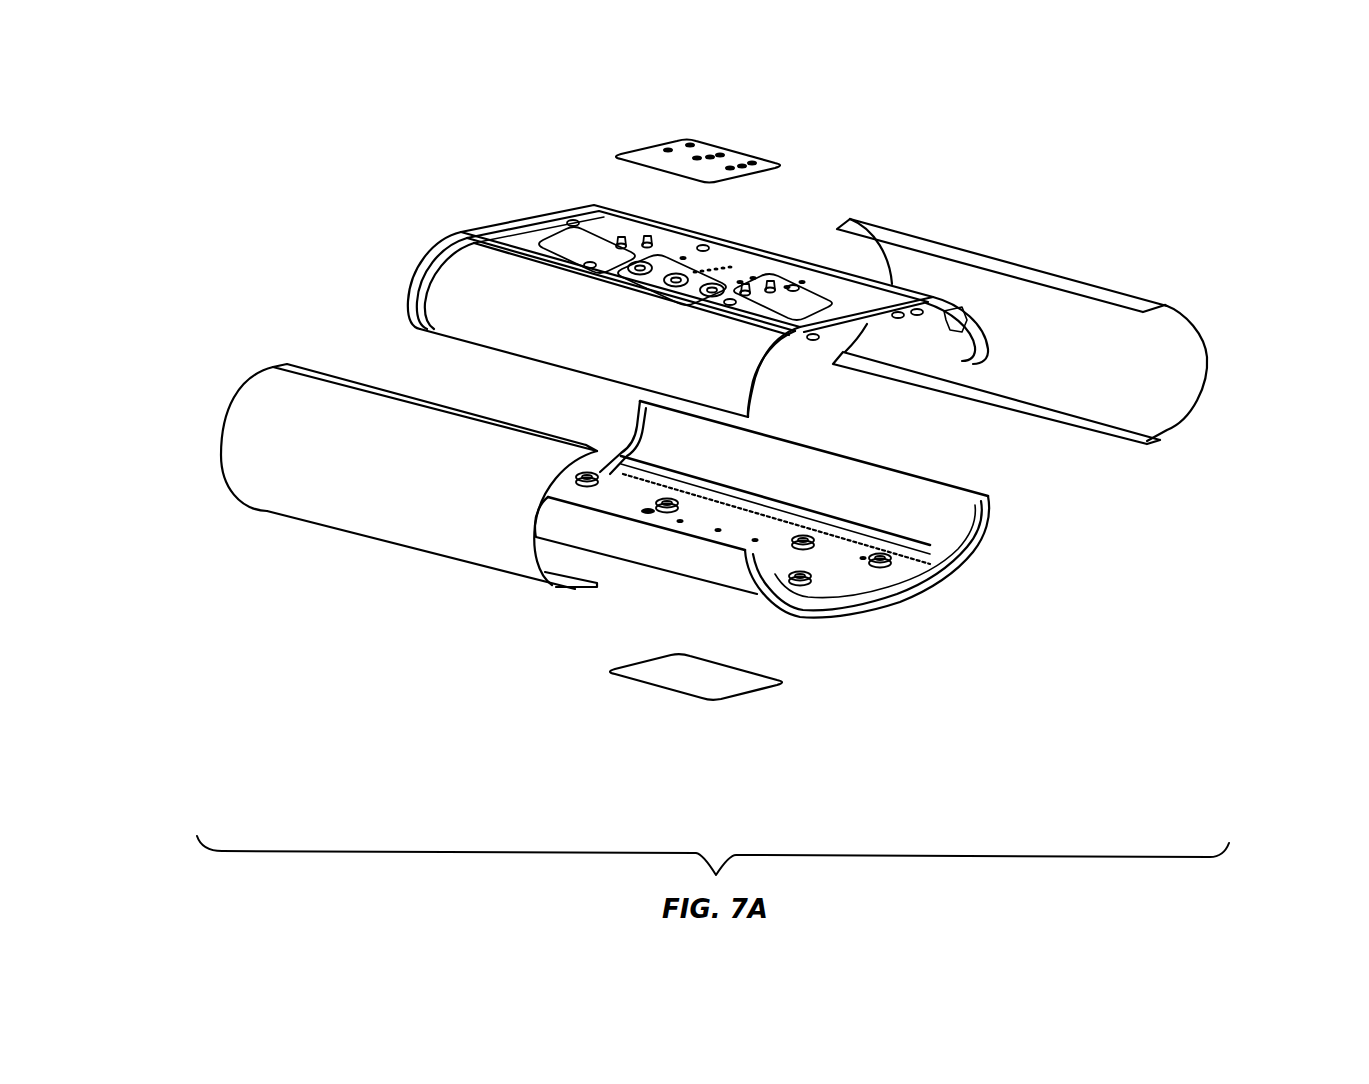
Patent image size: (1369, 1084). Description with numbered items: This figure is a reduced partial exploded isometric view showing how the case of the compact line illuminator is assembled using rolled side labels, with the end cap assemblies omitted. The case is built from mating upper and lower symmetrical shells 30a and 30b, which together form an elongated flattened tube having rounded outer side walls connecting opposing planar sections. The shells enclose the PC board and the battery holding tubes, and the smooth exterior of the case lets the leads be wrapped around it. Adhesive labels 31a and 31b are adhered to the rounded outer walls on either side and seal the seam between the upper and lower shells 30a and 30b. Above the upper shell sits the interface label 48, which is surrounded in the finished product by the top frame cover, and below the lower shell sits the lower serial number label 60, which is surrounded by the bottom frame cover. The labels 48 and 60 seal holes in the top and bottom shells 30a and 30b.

The interface label 48 is at (737, 148).
The lower serial number label 60 is at (657, 690).
The upper shell 30a is at (523, 217).
The lower shell 30b is at (868, 600).
The adhesive label 31a is at (217, 450).
The adhesive label 31b is at (1210, 381).